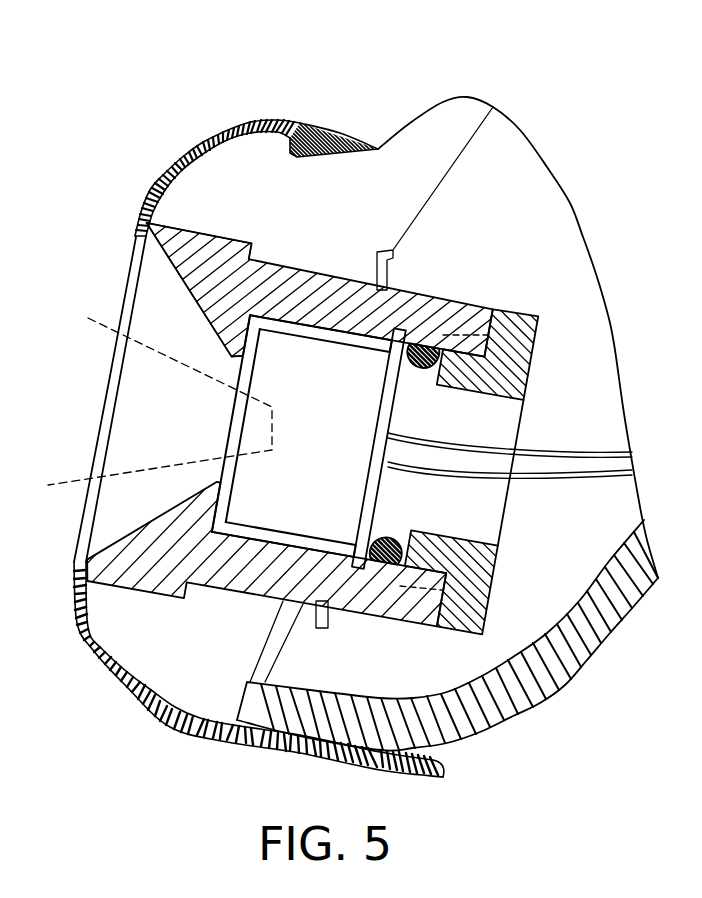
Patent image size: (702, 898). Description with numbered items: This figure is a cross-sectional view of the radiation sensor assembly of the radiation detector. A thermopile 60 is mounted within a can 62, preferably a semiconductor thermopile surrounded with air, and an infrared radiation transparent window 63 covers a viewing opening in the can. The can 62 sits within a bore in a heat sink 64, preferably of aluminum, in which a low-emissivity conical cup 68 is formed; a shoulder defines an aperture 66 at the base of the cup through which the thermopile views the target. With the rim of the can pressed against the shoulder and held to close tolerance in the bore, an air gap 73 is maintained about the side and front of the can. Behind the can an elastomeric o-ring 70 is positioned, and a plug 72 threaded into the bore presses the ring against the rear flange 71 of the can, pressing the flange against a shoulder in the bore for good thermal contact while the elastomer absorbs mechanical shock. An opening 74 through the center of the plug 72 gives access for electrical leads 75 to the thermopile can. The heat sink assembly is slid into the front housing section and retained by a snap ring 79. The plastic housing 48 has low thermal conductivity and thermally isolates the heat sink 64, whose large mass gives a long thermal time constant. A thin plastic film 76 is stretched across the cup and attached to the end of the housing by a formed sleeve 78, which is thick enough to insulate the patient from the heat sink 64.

The plastic housing 48 is at (580, 660).
The thermopile 60 is at (273, 452).
The can 62 is at (243, 545).
The infrared radiation transparent window 63 is at (241, 432).
The heat sink 64 is at (328, 271).
The aperture 66 is at (225, 377).
The conical cup 68 is at (207, 319).
The elastomeric o-ring 70 is at (382, 535).
The rear flange 71 is at (357, 578).
The plug 72 is at (490, 602).
The air gap 73 is at (329, 334).
The opening 74 is at (474, 543).
The electrical leads 75 is at (551, 470).
The thin plastic film 76 is at (77, 520).
The formed sleeve 78 is at (293, 126).
The snap ring 79 is at (319, 630).